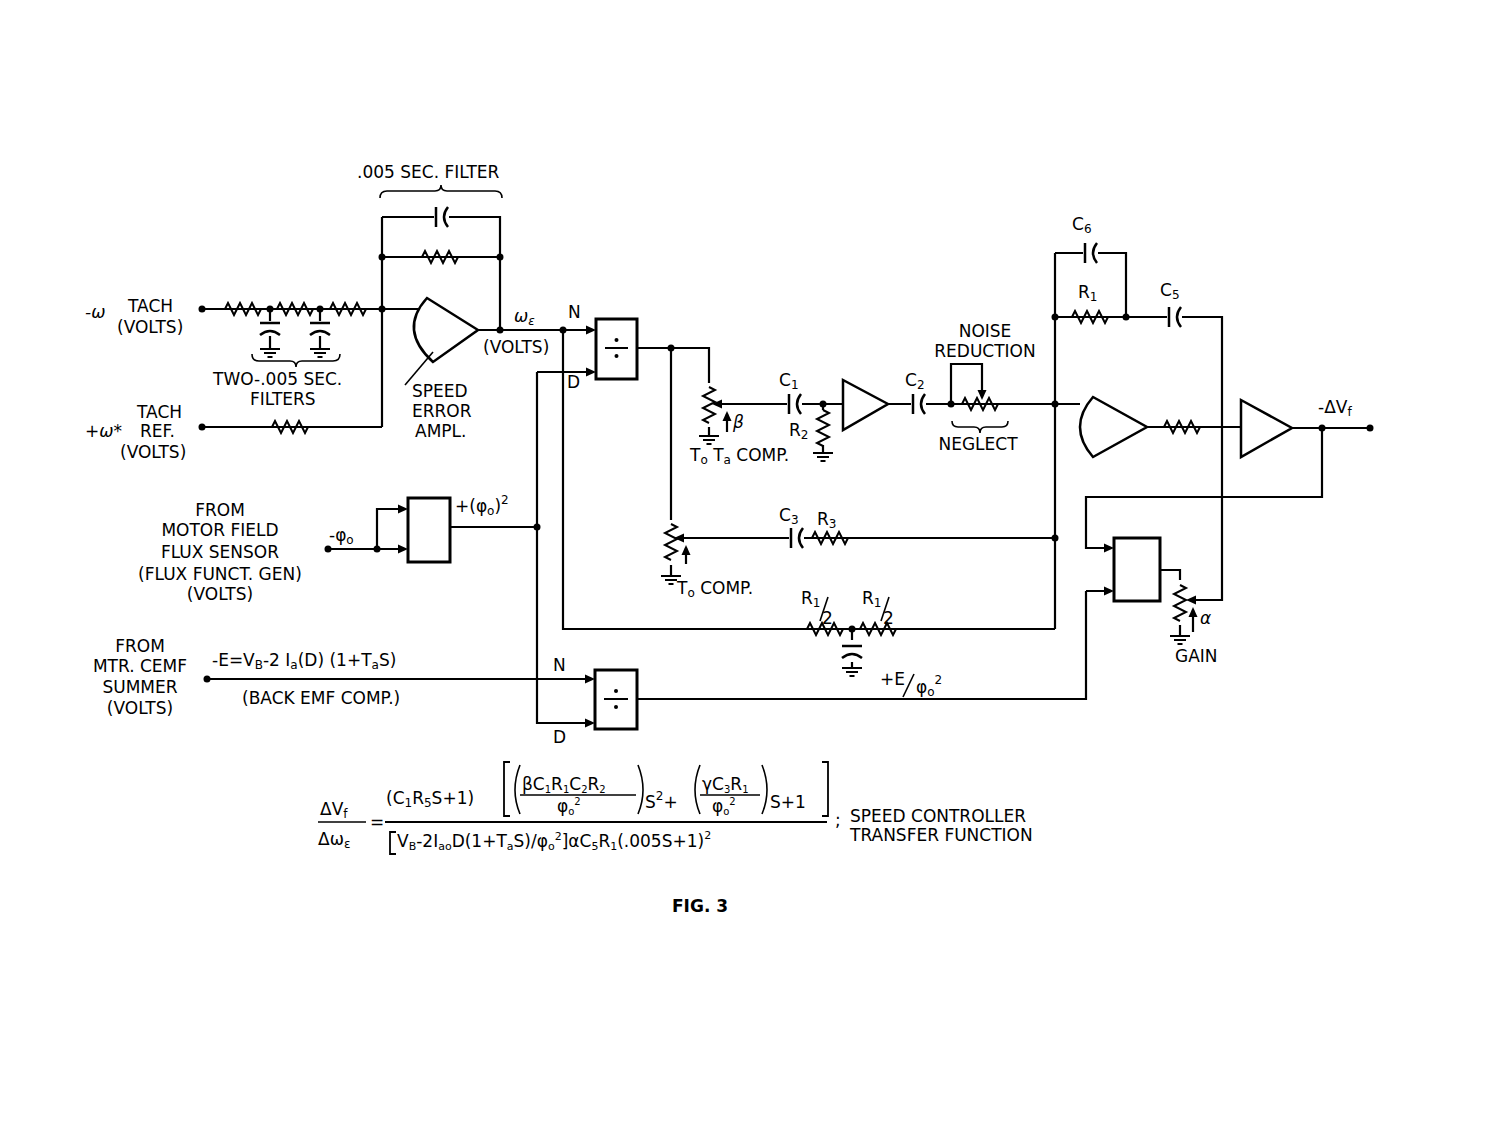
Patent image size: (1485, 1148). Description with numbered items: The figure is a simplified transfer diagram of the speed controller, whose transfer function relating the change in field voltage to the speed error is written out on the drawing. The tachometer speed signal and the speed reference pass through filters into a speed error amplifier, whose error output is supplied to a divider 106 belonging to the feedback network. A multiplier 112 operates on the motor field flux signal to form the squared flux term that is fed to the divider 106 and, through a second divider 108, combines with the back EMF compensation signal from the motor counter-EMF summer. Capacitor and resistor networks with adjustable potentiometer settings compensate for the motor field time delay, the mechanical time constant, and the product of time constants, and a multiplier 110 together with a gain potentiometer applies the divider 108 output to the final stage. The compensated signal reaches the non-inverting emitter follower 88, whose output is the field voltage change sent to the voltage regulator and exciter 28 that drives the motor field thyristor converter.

The divider 106 is at (630, 319).
The divider 108 is at (628, 670).
The multiplier 110 is at (1150, 538).
The multiplier 112 is at (424, 498).
The non-inverting emitter follower 88 is at (1252, 410).
The voltage regulator and exciter 28 is at (1417, 428).